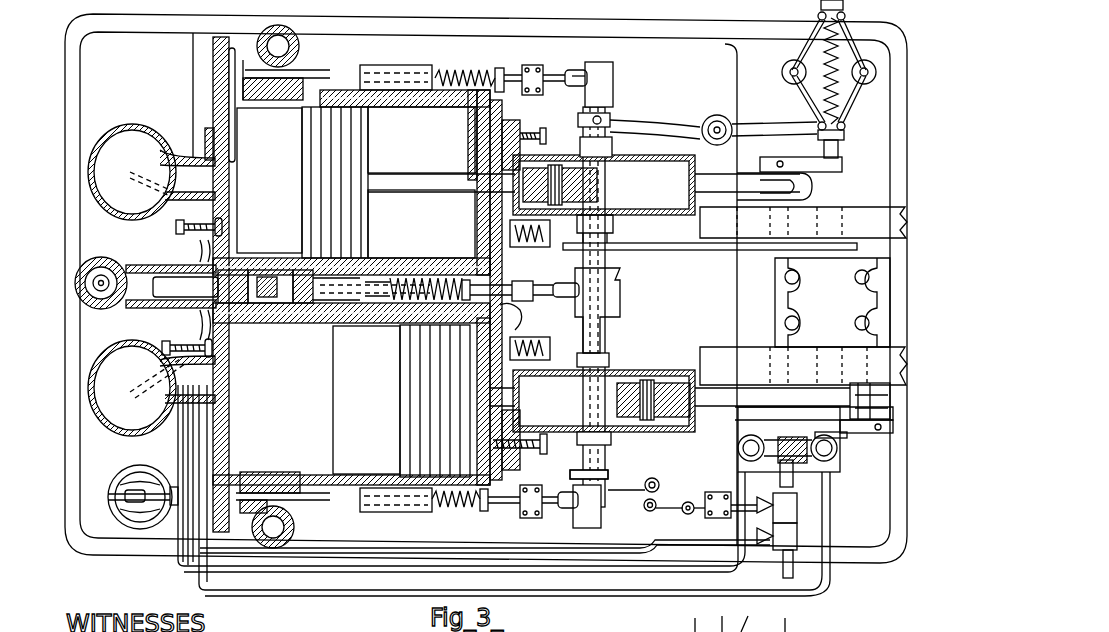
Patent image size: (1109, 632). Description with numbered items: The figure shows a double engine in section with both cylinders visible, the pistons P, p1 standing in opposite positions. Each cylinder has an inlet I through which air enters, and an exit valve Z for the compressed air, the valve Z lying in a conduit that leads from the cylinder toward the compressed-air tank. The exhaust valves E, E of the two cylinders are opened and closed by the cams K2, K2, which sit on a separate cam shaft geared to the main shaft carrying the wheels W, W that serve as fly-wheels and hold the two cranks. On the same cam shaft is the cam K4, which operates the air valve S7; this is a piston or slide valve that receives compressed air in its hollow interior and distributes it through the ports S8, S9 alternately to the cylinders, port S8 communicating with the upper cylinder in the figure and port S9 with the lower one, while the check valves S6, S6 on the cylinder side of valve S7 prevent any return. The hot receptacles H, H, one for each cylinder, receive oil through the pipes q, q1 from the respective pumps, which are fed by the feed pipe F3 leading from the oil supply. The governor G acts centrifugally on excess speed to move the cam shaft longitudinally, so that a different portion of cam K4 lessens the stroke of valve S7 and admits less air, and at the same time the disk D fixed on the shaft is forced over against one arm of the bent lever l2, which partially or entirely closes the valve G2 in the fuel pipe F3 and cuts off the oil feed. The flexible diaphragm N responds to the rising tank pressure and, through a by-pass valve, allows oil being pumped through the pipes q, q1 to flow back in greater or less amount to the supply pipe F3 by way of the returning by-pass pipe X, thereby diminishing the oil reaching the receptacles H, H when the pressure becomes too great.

The exhaust valve E is at (240, 75).
The hot receptacle H is at (151, 280).
The flexible diaphragm N is at (137, 480).
The piston P is at (323, 155).
The piston p1 is at (318, 291).
The air inlet I is at (421, 140).
The exit valve Z is at (478, 232).
The cam K2 is at (608, 86).
The governor G is at (866, 88).
The check valve S6 is at (222, 229).
The air valve S7 is at (194, 283).
The port S8 is at (227, 252).
The port S9 is at (207, 320).
The wheel W is at (712, 228).
The cam K4 is at (615, 310).
The disk D is at (595, 465).
The bent lever l2 is at (682, 484).
The by-pass pipe X is at (463, 557).
The valve G2 is at (814, 478).
The feed pipe F3 is at (796, 573).
The oil pipe q is at (613, 575).
The oil pipe q1 is at (642, 615).